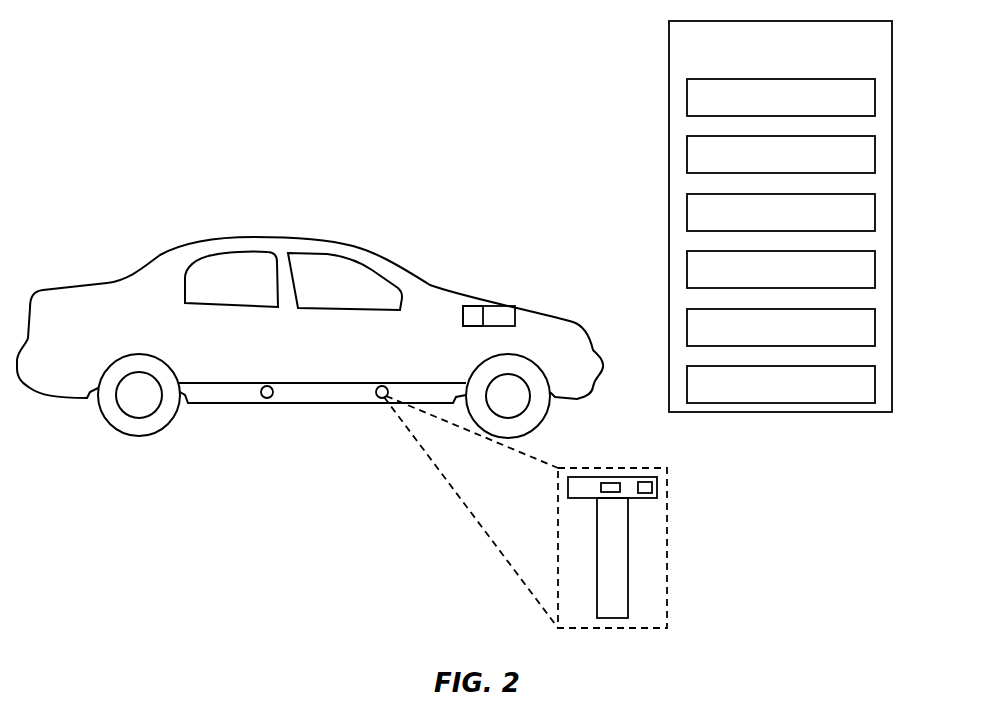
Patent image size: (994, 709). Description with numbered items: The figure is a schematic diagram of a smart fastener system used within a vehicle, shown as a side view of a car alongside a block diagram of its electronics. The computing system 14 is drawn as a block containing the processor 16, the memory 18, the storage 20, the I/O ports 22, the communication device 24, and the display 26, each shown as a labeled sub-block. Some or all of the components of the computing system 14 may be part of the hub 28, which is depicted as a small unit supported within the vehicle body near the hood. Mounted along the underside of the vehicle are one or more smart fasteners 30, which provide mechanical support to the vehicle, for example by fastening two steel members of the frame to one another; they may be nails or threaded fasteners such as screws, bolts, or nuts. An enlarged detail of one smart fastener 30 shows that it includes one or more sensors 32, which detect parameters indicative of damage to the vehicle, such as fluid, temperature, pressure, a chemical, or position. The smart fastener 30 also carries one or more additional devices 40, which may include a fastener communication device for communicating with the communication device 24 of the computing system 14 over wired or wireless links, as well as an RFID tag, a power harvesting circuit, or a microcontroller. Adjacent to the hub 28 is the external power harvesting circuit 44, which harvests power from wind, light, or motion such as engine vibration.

The computing system 14 is at (780, 20).
The processor 16 is at (875, 96).
The memory 18 is at (875, 153).
The storage 20 is at (875, 211).
The I/O ports 22 is at (875, 268).
The communication device 24 is at (875, 326).
The display 26 is at (875, 383).
The hub 28 is at (505, 291).
The smart fastener 30 is at (268, 386).
The sensor 32 is at (610, 482).
The additional device 40 is at (658, 488).
The external power harvesting circuit 44 is at (473, 305).